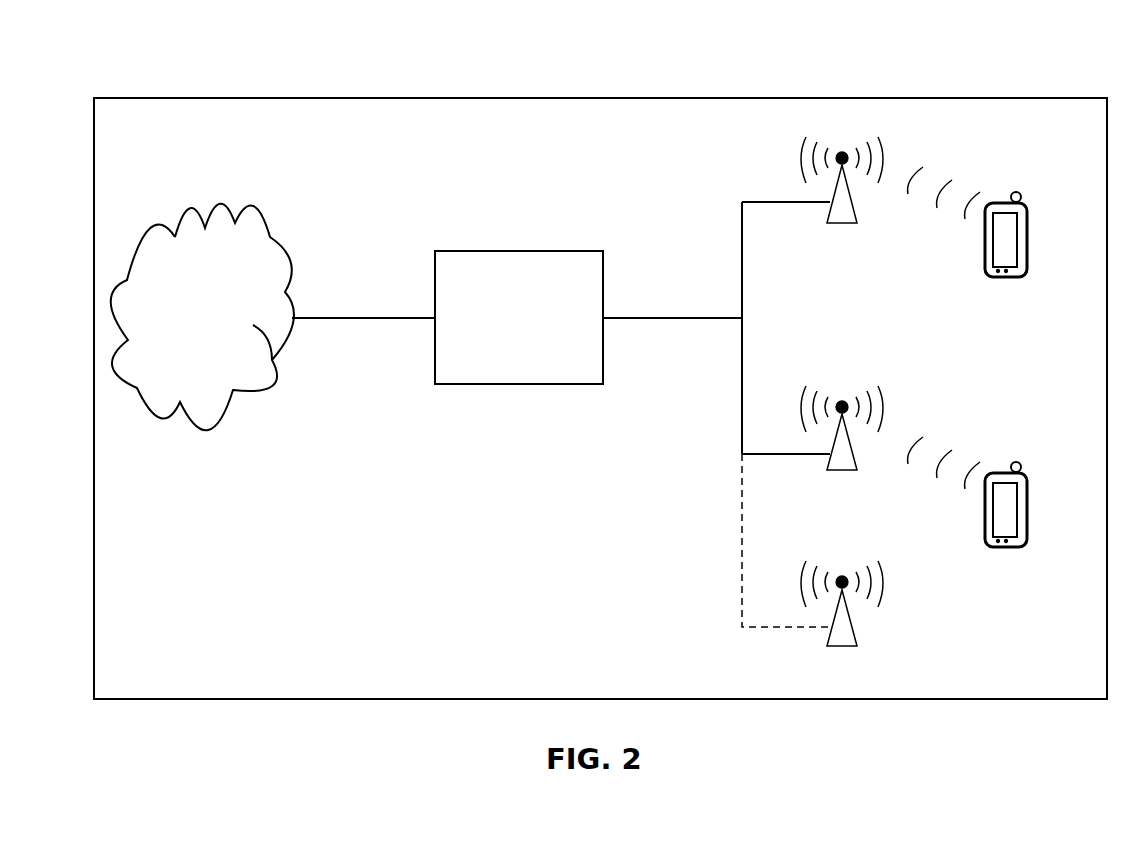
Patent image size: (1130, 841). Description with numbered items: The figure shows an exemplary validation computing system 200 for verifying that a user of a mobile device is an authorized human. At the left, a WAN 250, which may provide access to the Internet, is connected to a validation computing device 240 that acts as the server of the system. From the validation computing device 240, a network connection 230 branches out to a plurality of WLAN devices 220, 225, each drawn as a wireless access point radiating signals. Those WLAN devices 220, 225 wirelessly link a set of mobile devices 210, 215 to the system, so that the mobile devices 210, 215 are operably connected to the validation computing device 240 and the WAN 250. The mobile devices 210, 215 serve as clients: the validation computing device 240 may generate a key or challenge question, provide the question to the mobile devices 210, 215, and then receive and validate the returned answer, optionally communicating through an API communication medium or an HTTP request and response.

The validation computing system 200 is at (1068, 83).
The mobile device 210 is at (1028, 270).
The mobile device 215 is at (1028, 540).
The WLAN device 220 is at (855, 212).
The WLAN device 225 is at (855, 457).
The network connection 230 is at (705, 318).
The validation computing device 240 is at (592, 379).
The WAN 250 is at (218, 378).